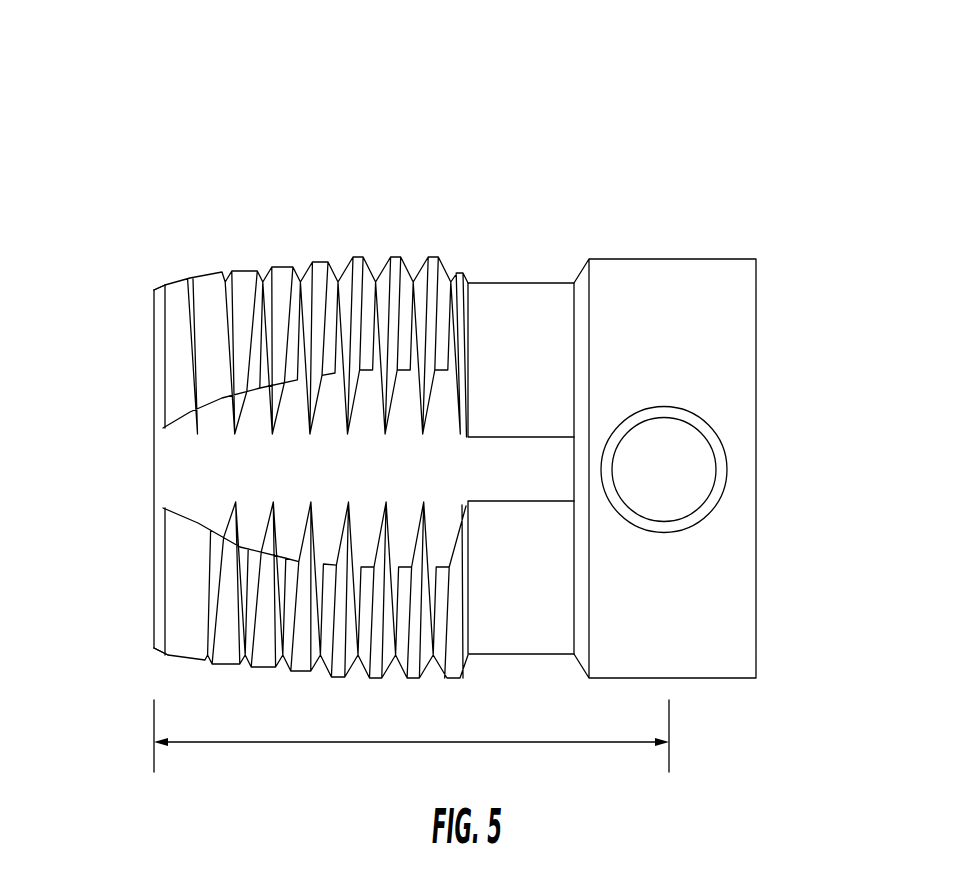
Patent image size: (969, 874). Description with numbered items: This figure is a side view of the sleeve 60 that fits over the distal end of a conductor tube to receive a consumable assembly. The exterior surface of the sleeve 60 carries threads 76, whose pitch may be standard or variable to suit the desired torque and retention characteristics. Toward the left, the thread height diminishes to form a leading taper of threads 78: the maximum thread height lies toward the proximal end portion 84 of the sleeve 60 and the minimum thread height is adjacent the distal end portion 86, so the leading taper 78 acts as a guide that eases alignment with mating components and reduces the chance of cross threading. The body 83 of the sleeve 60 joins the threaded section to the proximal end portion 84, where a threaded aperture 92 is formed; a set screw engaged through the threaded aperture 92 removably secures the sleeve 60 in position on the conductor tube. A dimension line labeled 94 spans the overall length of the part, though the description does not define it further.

The sleeve 60 is at (460, 353).
The threads 76 is at (403, 204).
The leading taper of threads 78 is at (300, 263).
The body 83 is at (545, 303).
The proximal end portion 84 is at (722, 468).
The distal end portion 86 is at (146, 367).
The threaded aperture 92 is at (702, 512).
The length dimension 94 is at (575, 742).